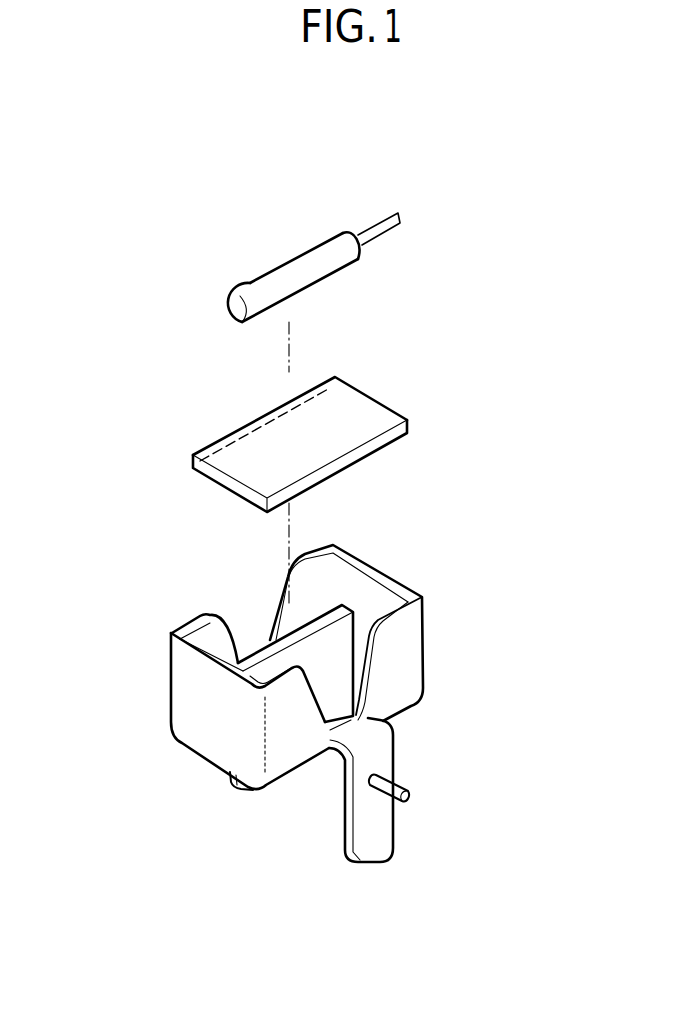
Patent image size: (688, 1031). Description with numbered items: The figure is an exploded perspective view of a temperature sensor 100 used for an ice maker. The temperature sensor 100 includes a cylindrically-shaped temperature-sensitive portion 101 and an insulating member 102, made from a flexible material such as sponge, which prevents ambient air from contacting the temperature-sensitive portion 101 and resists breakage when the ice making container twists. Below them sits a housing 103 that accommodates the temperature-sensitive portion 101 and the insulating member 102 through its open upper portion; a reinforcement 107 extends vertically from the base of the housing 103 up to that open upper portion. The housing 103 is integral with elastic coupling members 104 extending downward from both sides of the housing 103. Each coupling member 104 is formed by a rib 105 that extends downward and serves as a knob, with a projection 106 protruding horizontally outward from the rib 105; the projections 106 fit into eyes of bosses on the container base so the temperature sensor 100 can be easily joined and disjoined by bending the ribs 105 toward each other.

The temperature sensor 100 is at (413, 497).
The temperature-sensitive portion 101 is at (252, 284).
The insulating member 102 is at (247, 442).
The housing 103 is at (197, 710).
The coupling members 104 is at (398, 732).
The ribs 105 is at (385, 843).
The projections 106 is at (402, 789).
The reinforcement 107 is at (336, 639).